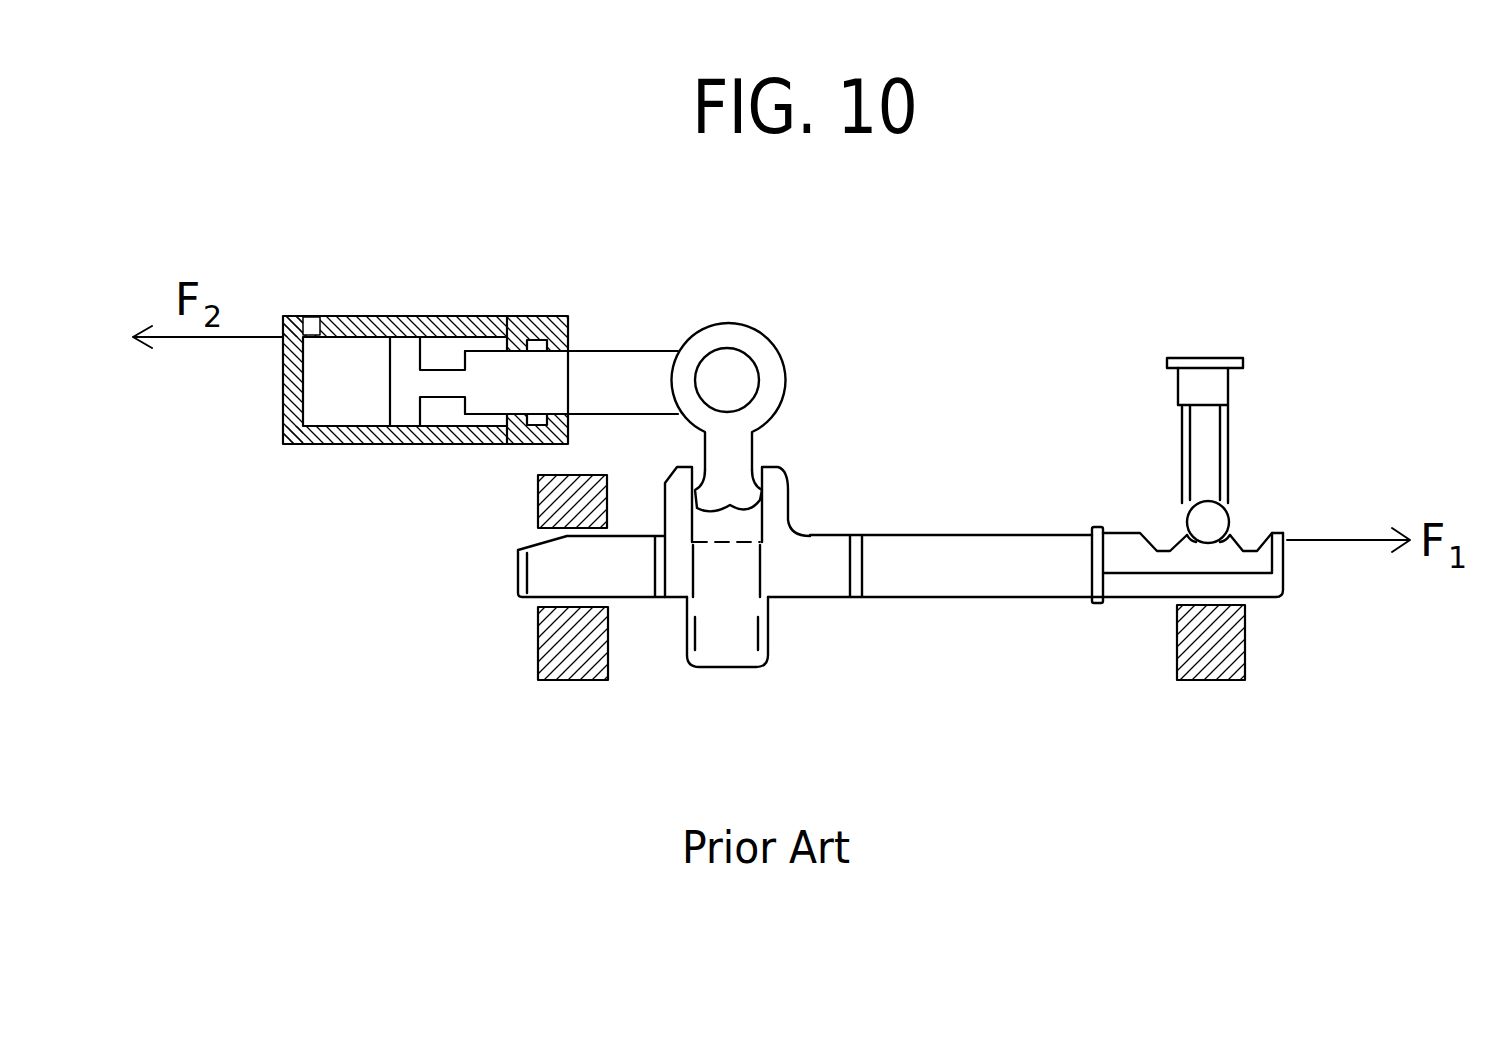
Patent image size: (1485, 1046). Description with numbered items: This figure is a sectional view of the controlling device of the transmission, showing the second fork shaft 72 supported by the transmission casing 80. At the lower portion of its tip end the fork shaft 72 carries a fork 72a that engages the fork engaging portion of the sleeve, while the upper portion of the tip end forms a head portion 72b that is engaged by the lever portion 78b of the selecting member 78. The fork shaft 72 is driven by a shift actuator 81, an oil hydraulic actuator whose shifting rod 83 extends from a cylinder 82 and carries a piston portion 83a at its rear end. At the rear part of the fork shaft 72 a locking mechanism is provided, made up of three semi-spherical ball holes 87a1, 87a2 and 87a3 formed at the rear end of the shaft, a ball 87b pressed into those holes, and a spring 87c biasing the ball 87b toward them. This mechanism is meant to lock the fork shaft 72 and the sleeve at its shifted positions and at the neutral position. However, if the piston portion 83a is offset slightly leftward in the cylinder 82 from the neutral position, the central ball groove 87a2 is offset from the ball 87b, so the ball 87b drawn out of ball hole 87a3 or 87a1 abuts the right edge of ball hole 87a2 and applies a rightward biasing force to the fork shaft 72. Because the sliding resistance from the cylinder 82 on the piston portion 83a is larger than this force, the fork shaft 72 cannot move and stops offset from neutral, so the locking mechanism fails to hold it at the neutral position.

The second fork shaft 72 is at (1000, 520).
The fork 72a is at (740, 647).
The head portion 72b is at (777, 508).
The selecting member 78 is at (740, 368).
The lever portion 78b is at (742, 467).
The transmission casing 80 is at (537, 638).
The shift actuator 81 is at (344, 294).
The cylinder 82 is at (425, 317).
The shifting rod 83 is at (605, 362).
The piston portion 83a is at (400, 404).
The ball hole 87a1 is at (1151, 520).
The central ball groove 87a2 is at (1213, 535).
The ball hole 87a3 is at (1260, 540).
The ball 87b is at (1230, 507).
The spring 87c is at (1233, 437).